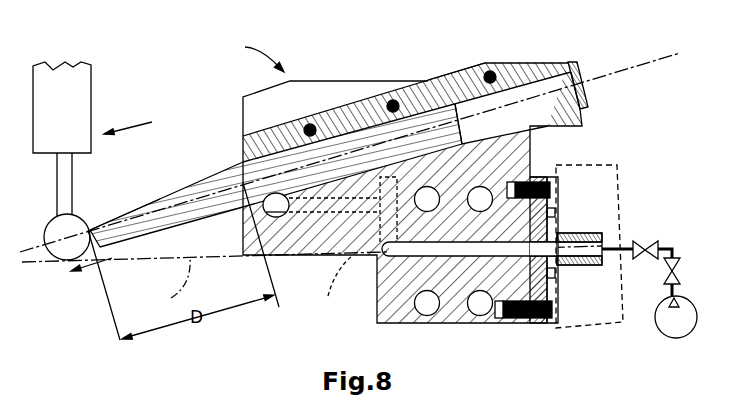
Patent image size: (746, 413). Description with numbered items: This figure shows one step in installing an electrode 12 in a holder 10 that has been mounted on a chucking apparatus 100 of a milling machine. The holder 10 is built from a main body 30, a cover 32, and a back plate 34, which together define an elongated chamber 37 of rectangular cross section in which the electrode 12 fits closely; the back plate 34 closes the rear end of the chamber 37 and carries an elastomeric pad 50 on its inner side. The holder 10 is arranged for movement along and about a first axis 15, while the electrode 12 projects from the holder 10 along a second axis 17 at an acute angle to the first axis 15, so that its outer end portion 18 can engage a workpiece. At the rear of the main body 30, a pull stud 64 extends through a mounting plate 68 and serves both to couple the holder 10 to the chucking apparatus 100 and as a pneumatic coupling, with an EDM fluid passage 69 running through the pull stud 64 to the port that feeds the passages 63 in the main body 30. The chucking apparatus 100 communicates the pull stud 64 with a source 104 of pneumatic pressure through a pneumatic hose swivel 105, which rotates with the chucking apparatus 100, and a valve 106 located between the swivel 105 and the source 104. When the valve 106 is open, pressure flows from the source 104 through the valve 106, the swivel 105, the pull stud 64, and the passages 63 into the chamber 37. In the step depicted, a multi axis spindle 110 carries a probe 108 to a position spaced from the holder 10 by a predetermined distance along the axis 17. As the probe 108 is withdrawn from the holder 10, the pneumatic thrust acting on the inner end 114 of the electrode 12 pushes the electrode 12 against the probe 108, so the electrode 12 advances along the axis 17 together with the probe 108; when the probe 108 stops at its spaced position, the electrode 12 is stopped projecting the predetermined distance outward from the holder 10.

The holder 10 is at (251, 54).
The electrode 12 is at (189, 182).
The first axis 15 is at (166, 286).
The second axis 17 is at (31, 246).
The outer end portion 18 is at (117, 213).
The main body 30 is at (313, 80).
The cover 32 is at (350, 98).
The back plate 34 is at (580, 75).
The chamber 37 is at (511, 98).
The elastomeric pad 50 is at (552, 65).
The passages 63 is at (382, 287).
The pull stud 64 is at (585, 234).
The mounting plate 68 is at (549, 323).
The EDM fluid passage 69 is at (592, 306).
The chucking apparatus 100 is at (604, 165).
The source of pneumatic pressure 104 is at (676, 323).
The pneumatic hose swivel 105 is at (647, 240).
The valve 106 is at (676, 266).
The probe 108 is at (63, 252).
The multi axis spindle 110 is at (72, 90).
The inner end 114 is at (466, 84).